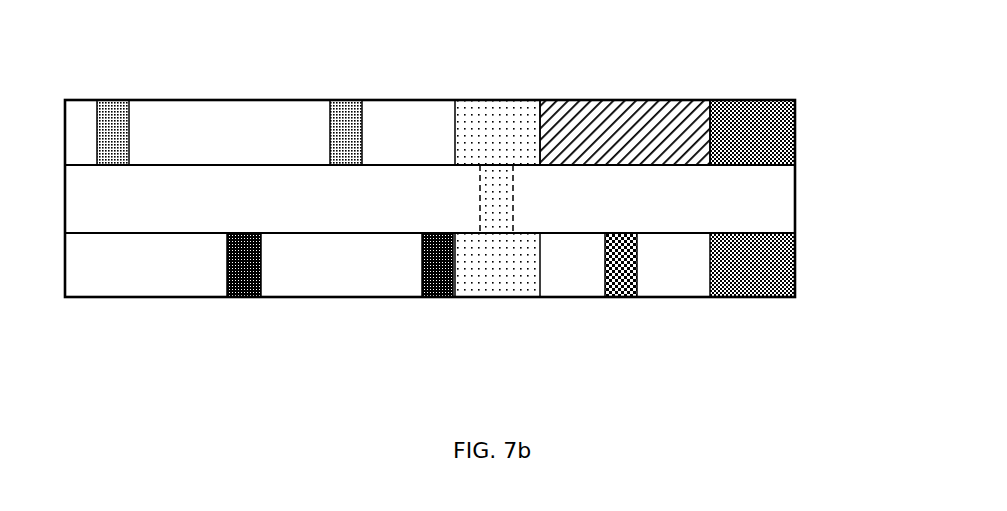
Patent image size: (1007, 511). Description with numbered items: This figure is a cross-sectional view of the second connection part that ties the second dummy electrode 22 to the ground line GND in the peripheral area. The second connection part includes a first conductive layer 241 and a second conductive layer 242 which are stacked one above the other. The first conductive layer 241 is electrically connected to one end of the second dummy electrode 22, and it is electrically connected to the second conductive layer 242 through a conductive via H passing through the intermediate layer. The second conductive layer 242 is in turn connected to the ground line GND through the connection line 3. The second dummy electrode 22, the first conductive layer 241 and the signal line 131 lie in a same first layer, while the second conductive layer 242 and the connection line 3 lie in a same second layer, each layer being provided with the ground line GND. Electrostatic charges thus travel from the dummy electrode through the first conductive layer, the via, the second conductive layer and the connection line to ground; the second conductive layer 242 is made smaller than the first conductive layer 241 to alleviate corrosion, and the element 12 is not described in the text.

The first conductive via / pad 12 is at (113, 122).
The second conductive layer 242 is at (477, 112).
The connection line 3 is at (572, 117).
The ground line GND is at (777, 133).
The conductive via H is at (500, 218).
The second dummy electrode 22 is at (436, 287).
The first conductive layer 241 is at (508, 283).
The signal line 131 is at (617, 283).